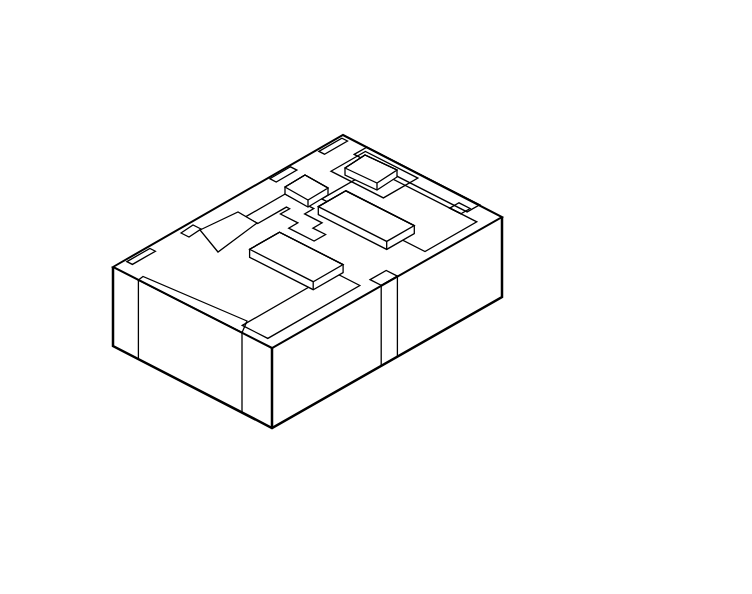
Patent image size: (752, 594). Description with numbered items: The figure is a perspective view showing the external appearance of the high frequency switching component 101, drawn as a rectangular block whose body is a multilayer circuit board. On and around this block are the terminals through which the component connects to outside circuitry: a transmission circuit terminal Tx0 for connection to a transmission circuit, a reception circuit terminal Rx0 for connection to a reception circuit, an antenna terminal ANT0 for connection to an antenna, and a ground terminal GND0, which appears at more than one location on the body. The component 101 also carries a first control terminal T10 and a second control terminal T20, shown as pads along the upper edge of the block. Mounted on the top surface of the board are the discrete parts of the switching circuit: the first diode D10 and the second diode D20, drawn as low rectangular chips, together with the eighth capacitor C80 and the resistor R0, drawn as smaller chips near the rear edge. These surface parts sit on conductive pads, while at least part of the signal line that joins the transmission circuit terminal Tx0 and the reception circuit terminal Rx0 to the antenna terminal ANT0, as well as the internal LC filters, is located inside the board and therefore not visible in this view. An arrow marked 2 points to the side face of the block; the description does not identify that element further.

The high frequency switching component 101 is at (190, 91).
The multilayer substrate 2 is at (505, 264).
The ground terminal GND0 is at (199, 367).
The transmission circuit terminal Tx0 is at (135, 257).
The reception circuit terminal Rx0 is at (335, 146).
The antenna terminal ANT0 is at (389, 353).
The first control terminal T10 is at (188, 229).
The second control terminal T20 is at (279, 175).
The resistor R0 is at (305, 184).
The eighth capacitor C80 is at (368, 156).
The first diode D10 is at (315, 270).
The second diode D20 is at (380, 218).